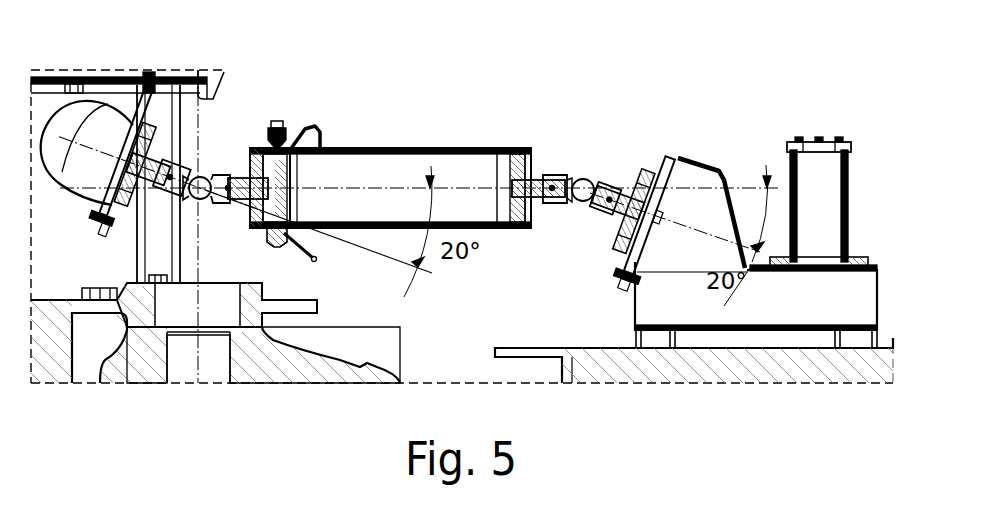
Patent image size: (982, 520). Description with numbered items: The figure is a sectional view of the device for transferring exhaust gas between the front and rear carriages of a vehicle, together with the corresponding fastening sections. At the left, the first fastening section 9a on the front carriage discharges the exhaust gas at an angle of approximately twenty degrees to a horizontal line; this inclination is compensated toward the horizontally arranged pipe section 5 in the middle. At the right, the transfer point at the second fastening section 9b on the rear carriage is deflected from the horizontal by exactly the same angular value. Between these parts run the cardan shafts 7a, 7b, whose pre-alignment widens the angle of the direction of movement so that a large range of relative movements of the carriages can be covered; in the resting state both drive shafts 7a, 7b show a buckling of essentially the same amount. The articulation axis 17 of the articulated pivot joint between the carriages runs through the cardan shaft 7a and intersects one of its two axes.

The pipe section 5 is at (405, 146).
The cardan shaft 7a is at (207, 180).
The cardan shaft 7b is at (597, 180).
The first fastening section 9a is at (135, 194).
The second fastening section 9b is at (674, 160).
The articulation axis 17 is at (201, 268).